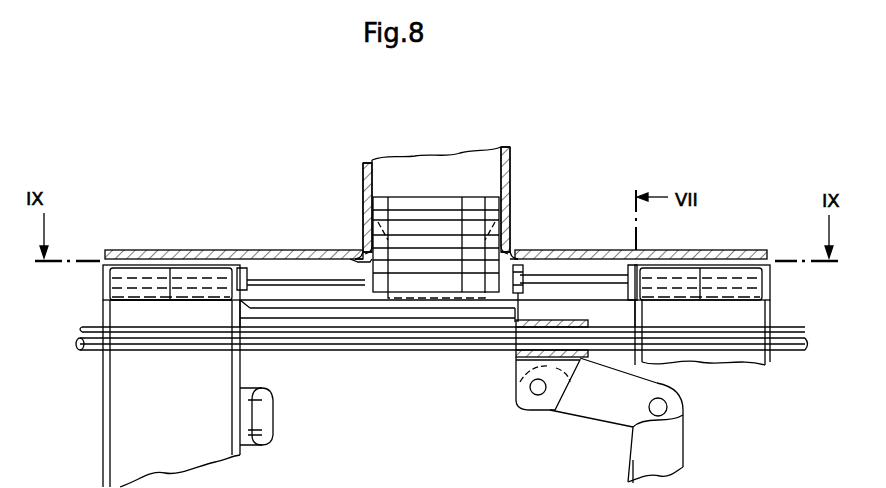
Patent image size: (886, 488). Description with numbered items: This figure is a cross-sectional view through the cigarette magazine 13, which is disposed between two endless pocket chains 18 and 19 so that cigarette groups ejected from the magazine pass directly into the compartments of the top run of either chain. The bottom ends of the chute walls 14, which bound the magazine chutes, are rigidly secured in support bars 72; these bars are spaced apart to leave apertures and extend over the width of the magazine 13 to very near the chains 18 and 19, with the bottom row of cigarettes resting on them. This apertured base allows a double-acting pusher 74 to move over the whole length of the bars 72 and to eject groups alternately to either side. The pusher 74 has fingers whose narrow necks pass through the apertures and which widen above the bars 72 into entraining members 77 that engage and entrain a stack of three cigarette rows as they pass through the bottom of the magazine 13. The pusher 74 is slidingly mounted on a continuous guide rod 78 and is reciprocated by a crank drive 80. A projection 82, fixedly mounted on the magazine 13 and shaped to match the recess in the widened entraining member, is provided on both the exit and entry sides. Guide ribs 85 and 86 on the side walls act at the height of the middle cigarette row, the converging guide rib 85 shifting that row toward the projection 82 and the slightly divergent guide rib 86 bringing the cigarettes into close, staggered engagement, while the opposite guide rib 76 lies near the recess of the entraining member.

The cigarette magazine 13 is at (521, 150).
The chute walls 14 is at (402, 299).
The pocket chain 18 is at (99, 252).
The pocket chain 19 is at (773, 255).
The support bars 72 is at (317, 302).
The double-acting pusher 74 is at (500, 372).
The guide rib 76 is at (512, 316).
The entraining members 77 is at (522, 262).
The guide rod 78 is at (785, 349).
The crank drive 80 is at (575, 425).
The projection 82 is at (358, 252).
The guide rib 85 is at (264, 280).
The guide rib 86 is at (569, 278).